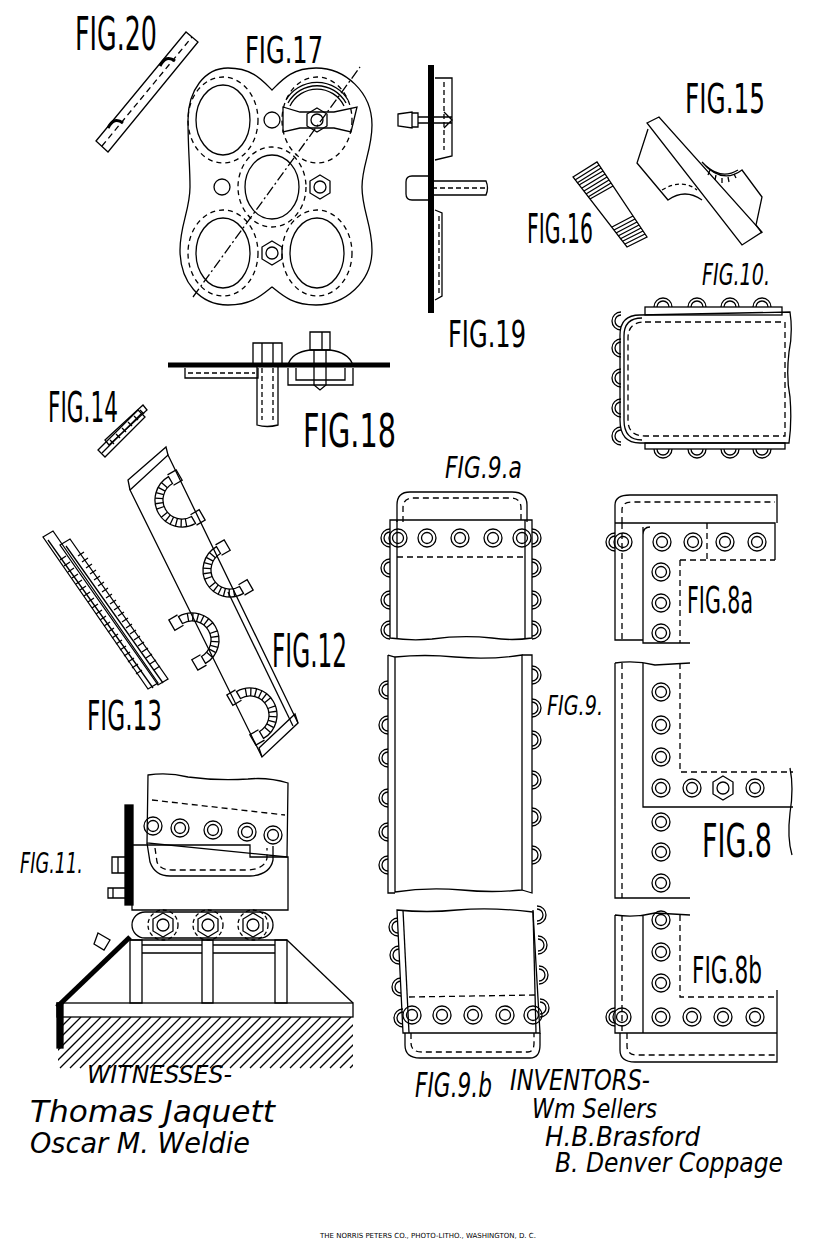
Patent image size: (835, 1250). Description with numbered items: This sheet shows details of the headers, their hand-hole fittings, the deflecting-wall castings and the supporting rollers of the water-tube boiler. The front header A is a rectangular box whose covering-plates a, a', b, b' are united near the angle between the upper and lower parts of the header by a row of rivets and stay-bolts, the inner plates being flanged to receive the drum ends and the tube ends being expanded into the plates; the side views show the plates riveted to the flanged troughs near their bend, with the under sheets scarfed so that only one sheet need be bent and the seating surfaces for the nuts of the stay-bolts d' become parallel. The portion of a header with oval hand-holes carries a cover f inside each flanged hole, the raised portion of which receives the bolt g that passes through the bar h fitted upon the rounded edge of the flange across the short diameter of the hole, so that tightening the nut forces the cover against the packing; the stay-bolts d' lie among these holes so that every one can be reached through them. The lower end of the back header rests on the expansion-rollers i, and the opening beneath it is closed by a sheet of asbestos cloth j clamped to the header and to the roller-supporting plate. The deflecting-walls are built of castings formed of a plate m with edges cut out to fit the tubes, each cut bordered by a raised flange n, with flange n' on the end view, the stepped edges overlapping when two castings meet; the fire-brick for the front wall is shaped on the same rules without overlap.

In FIG. 17, the cover f is at (214, 187).
In FIG. 19, the cover f is at (447, 80).
In FIG. 18, the cover f is at (355, 378).
In FIG. 17, the bolt g is at (230, 187).
In FIG. 18, the bolt g is at (328, 333).
In FIG. 17, the bar h is at (330, 150).
In FIG. 19, the bar h is at (420, 130).
In FIG. 18, the bar h is at (355, 357).
In FIG. 17, the rollers i is at (266, 195).
In FIG. 11, the rollers i is at (275, 924).
In FIG. 17, the stay-bolt d' is at (363, 212).
In FIG. 19, the stay-bolt d' is at (446, 176).
In FIG. 18, the stay-bolt d' is at (250, 385).
In FIG. 12, the flange n is at (216, 607).
In FIG. 13, the flange n is at (105, 610).
In FIG. 14, the clip piece n' is at (120, 444).
In FIG. 12, the plate m is at (190, 552).
In FIG. 9A, the covering-plate a is at (544, 579).
In FIG. 9, the covering-plate a' is at (550, 774).
In FIG. 9, the covering-plate b is at (374, 774).
In FIG. 9, the covering-plate b' is at (376, 877).
In FIG. 11, the asbestos cloth j is at (120, 926).
In FIG. 9, the front header A is at (458, 773).